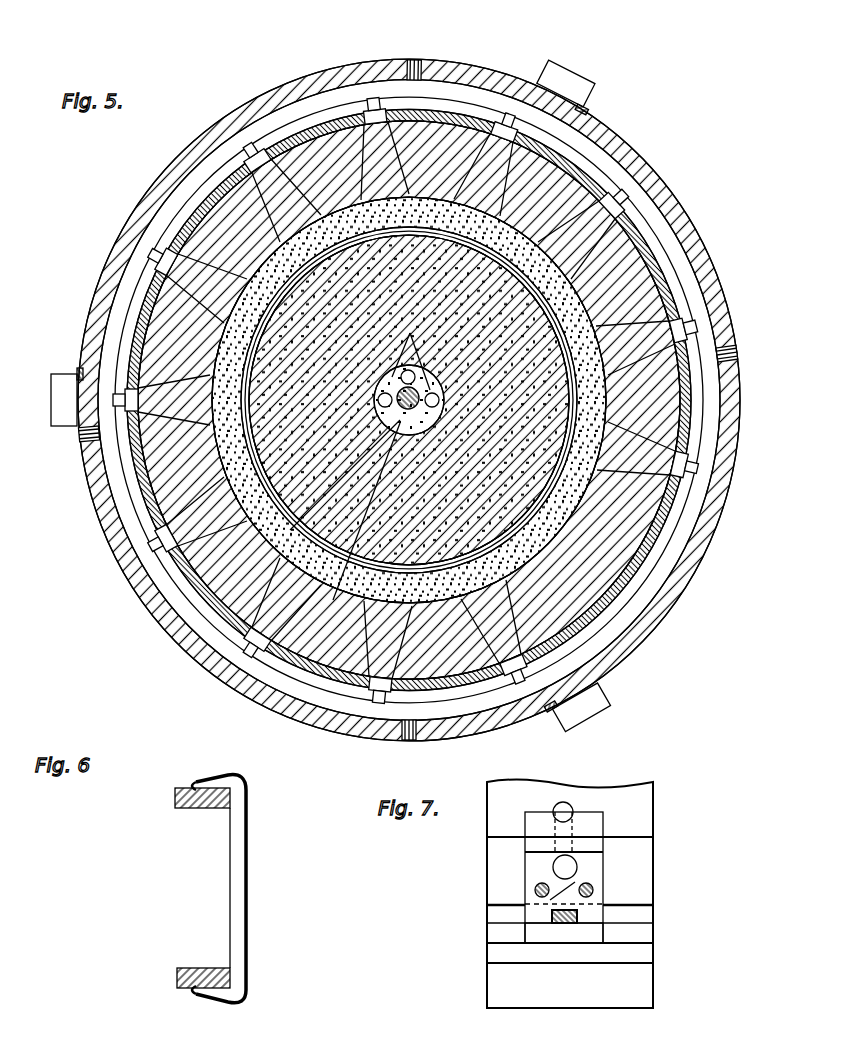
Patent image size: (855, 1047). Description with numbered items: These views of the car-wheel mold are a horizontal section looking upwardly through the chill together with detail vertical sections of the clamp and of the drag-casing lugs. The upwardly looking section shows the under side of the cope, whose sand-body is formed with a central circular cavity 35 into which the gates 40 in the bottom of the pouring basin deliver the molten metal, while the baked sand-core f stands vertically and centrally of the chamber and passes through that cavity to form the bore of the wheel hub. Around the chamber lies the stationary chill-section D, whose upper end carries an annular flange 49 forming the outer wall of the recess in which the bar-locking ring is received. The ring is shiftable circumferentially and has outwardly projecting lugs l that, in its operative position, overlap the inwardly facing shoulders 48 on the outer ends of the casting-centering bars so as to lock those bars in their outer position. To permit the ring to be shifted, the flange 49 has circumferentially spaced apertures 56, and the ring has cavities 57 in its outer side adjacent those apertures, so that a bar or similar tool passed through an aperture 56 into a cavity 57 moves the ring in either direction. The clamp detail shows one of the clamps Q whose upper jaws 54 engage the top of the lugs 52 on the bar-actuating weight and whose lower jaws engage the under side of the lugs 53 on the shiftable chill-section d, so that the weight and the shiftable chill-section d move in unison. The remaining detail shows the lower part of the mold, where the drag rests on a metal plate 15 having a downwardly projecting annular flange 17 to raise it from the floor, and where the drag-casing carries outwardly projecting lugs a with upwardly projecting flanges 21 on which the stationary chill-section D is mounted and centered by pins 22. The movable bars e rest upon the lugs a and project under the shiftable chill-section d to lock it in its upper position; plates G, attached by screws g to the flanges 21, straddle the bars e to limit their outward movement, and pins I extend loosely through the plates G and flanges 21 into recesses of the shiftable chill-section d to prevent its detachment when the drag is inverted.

In FIG. 5, the inwardly facing shoulders 48 is at (250, 150).
In FIG. 5, the annular flange 49 is at (145, 203).
In FIG. 5, the lugs 52 is at (570, 92).
In FIG. 6, the lugs 52 is at (175, 800).
In FIG. 6, the lugs 53 is at (177, 978).
In FIG. 6, the upper jaws 54 is at (200, 782).
In FIG. 5, the apertures 56 is at (405, 75).
In FIG. 5, the cavities 57 is at (373, 105).
In FIG. 5, the gates 40 is at (409, 377).
In FIG. 5, the circular cavity 35 is at (361, 531).
In FIG. 7, the pins 22 is at (567, 803).
In FIG. 7, the upwardly projecting flanges 21 is at (593, 848).
In FIG. 7, the metal plate 15 is at (497, 953).
In FIG. 7, the annular flange 17 is at (630, 983).
In FIG. 5, the lugs l is at (365, 124).
In FIG. 5, the clamps Q is at (600, 95).
In FIG. 6, the clamps Q is at (240, 886).
In FIG. 5, the baked sand-core f is at (320, 492).
In FIG. 7, the stationary chill-section D is at (590, 825).
In FIG. 7, the shiftable chill-section d is at (640, 873).
In FIG. 7, the pins I is at (553, 866).
In FIG. 7, the plates G is at (597, 903).
In FIG. 7, the screws g is at (535, 891).
In FIG. 7, the movable bars e is at (585, 918).
In FIG. 7, the annular metal shell or casing A is at (645, 930).
In FIG. 7, the lugs a is at (593, 933).